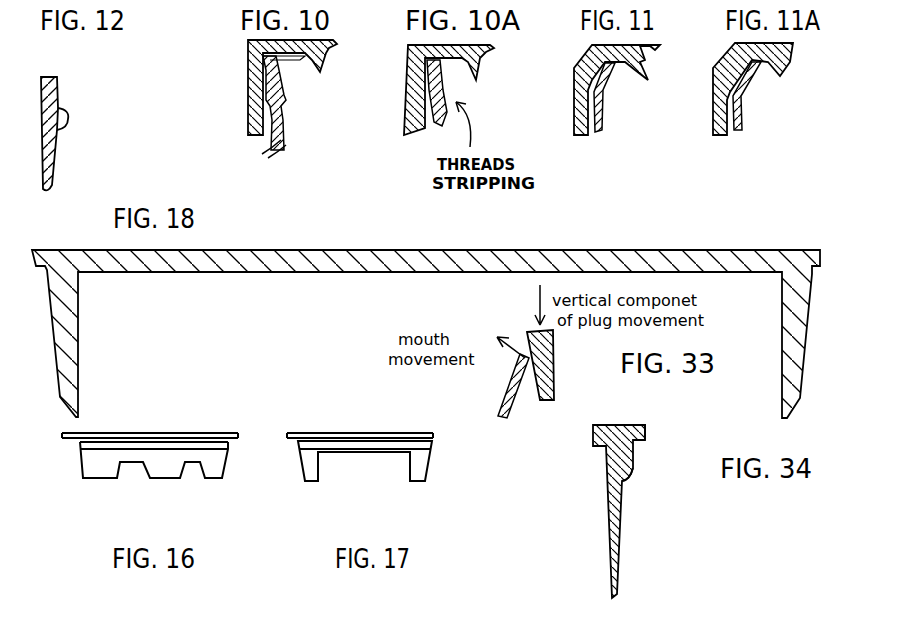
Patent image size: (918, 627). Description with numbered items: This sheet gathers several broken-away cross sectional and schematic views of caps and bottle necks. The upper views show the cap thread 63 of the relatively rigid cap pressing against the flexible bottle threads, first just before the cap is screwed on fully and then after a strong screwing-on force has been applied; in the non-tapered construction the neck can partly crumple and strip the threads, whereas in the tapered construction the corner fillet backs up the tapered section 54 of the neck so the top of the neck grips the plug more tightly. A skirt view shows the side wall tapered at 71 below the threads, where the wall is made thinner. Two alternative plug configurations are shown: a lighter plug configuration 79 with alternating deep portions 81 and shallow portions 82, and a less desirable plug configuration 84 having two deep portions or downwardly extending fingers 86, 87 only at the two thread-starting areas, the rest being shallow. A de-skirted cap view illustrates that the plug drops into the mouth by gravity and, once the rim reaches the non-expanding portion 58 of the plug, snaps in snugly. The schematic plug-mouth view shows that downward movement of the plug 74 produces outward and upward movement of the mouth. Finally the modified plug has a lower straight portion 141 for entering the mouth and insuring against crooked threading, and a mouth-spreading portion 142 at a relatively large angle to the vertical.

In FIG. 33, the tapered section 54 is at (509, 377).
In FIG. 18, the non-expanding portion of the plug 58 is at (810, 290).
In FIG. 16, the non-expanding portion of the plug 58 is at (230, 444).
In FIG. 17, the non-expanding portion of the plug 58 is at (268, 443).
In FIG. 34, the non-expanding portion of the plug 58 is at (630, 458).
In FIG. 12, the cap thread 63 is at (68, 112).
In FIG. 12, the tapered side wall 71 is at (52, 172).
In FIG. 33, the plug 74 is at (556, 372).
In FIG. 16, the plug configuration 79 is at (73, 472).
In FIG. 16, the deep portion 81 is at (220, 480).
In FIG. 16, the shallow portion 82 is at (193, 462).
In FIG. 17, the plug configuration 84 is at (440, 465).
In FIG. 17, the deep portion 86 is at (310, 481).
In FIG. 17, the deep portion 87 is at (422, 481).
In FIG. 34, the lower straight portion 141 is at (622, 545).
In FIG. 34, the mouth-spreading portion 142 is at (622, 478).